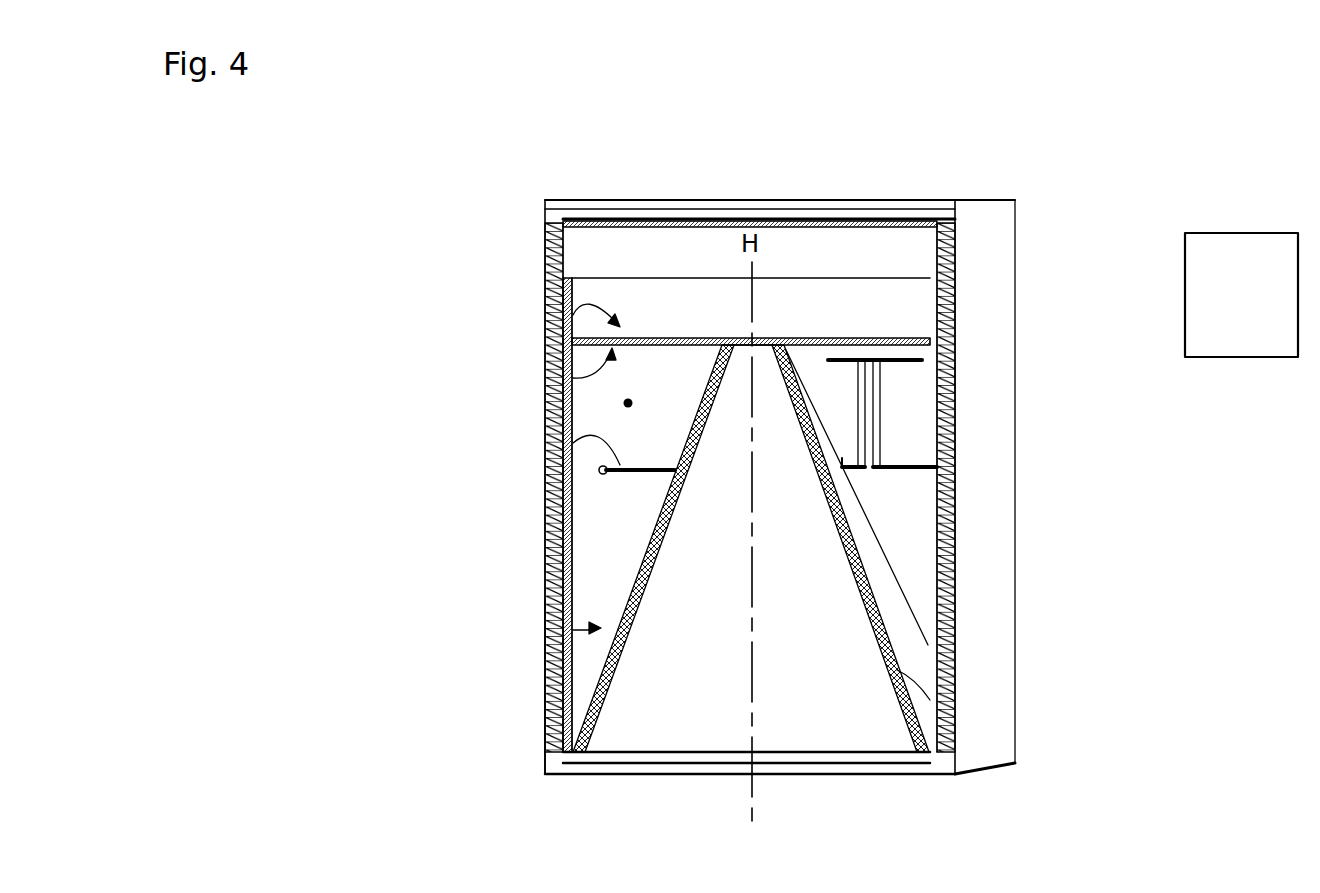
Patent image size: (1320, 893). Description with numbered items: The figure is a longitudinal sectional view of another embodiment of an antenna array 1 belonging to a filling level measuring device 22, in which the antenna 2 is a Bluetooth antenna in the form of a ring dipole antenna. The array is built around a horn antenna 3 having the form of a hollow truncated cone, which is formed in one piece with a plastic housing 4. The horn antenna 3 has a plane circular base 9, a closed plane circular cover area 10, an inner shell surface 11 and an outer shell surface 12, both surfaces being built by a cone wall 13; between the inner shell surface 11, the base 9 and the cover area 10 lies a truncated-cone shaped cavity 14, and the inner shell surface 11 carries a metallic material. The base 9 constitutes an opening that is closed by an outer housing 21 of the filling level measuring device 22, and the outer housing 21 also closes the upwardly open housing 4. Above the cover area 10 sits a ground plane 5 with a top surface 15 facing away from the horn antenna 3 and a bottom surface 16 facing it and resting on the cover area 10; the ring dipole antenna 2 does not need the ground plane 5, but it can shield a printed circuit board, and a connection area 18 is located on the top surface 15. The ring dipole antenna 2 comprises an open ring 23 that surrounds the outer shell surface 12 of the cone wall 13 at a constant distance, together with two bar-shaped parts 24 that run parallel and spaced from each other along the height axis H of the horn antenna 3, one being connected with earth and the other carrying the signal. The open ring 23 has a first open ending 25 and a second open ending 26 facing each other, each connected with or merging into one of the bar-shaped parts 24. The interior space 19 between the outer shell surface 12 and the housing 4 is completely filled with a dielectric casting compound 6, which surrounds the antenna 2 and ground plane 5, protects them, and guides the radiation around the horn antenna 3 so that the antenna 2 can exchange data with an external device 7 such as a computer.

The antenna array 1 is at (876, 250).
The antenna 2 is at (893, 403).
The horn antenna 3 is at (547, 667).
The housing 4 is at (545, 475).
The ground plane 5 is at (548, 320).
The casting compound 6 is at (593, 573).
The external device 7 is at (1257, 260).
The base 9 is at (655, 745).
The cover area 10 is at (752, 340).
The inner shell surface 11 is at (865, 645).
The outer shell surface 12 is at (900, 620).
The cone wall 13 is at (957, 725).
The cavity 14 is at (627, 670).
The top surface 15 is at (671, 338).
The bottom surface 16 is at (547, 368).
The connection area 18 is at (500, 515).
The interior space 19 is at (628, 403).
The outer housing 21 is at (977, 300).
The filling level measuring device 22 is at (1120, 470).
The open ring 23 is at (547, 453).
The bar-shaped parts 24 is at (867, 433).
The first open ending 25 is at (873, 475).
The second open ending 26 is at (863, 477).